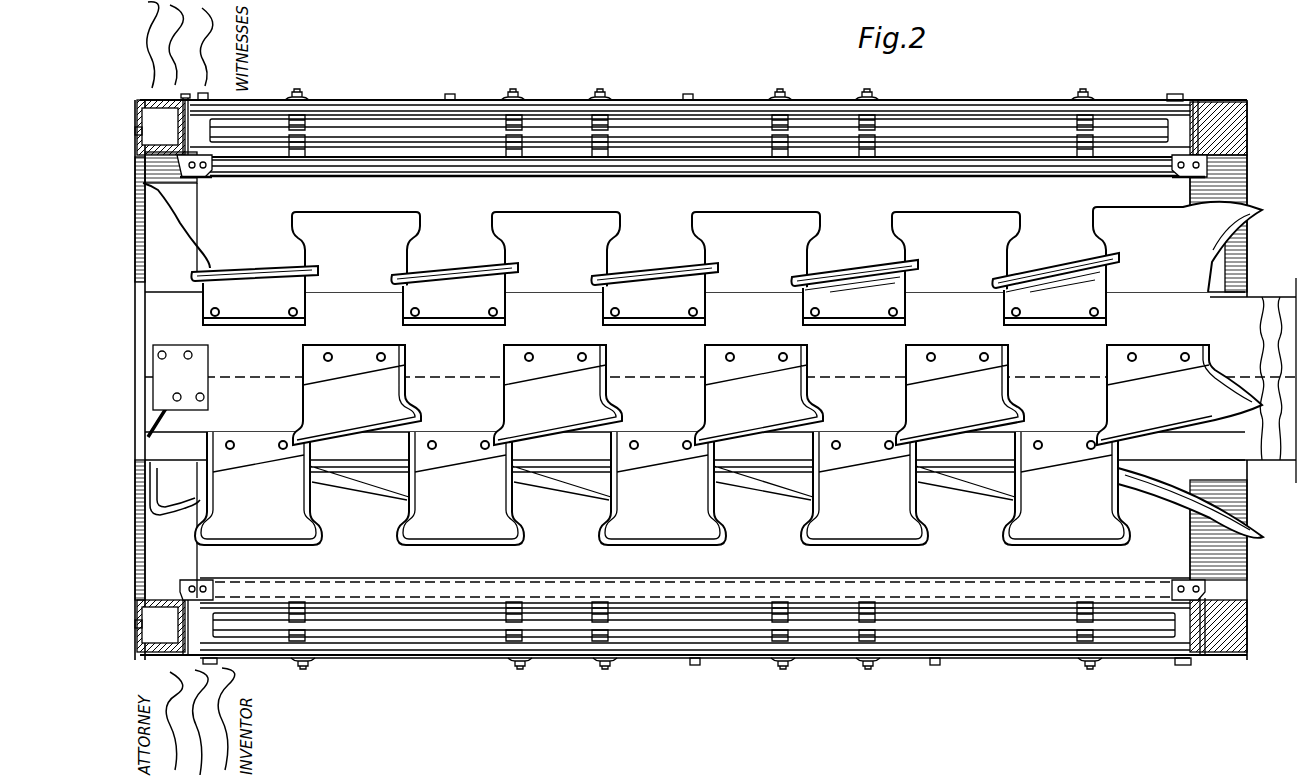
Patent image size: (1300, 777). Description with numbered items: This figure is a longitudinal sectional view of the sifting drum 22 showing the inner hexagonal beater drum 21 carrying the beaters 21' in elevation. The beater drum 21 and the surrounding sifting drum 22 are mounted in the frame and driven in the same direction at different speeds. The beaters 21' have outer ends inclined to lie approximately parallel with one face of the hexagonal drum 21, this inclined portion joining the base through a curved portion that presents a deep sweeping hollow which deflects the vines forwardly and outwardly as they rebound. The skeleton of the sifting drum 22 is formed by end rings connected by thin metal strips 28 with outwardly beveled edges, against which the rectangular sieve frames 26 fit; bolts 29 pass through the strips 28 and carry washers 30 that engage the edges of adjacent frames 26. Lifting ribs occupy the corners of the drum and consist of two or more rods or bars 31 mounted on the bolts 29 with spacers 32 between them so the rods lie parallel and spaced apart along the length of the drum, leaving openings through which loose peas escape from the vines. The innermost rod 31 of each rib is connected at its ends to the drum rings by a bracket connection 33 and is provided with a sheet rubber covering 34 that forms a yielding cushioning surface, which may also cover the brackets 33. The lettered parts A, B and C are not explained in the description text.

The hexagonal beater drum 21 is at (200, 377).
The beaters 21' is at (727, 373).
The sifting drum 22 is at (188, 565).
The sieve frames 26 is at (450, 95).
The metal strips 28 is at (650, 115).
The bolts 29 is at (603, 93).
The washers 30 is at (302, 92).
The rods or bars 31 is at (344, 128).
The spacers 32 is at (586, 140).
The bracket connection 33 is at (208, 177).
The sheet rubber covering 34 is at (722, 172).
The curved guide member A is at (173, 222).
The bracket B is at (418, 222).
The curved end bracket C is at (1135, 215).